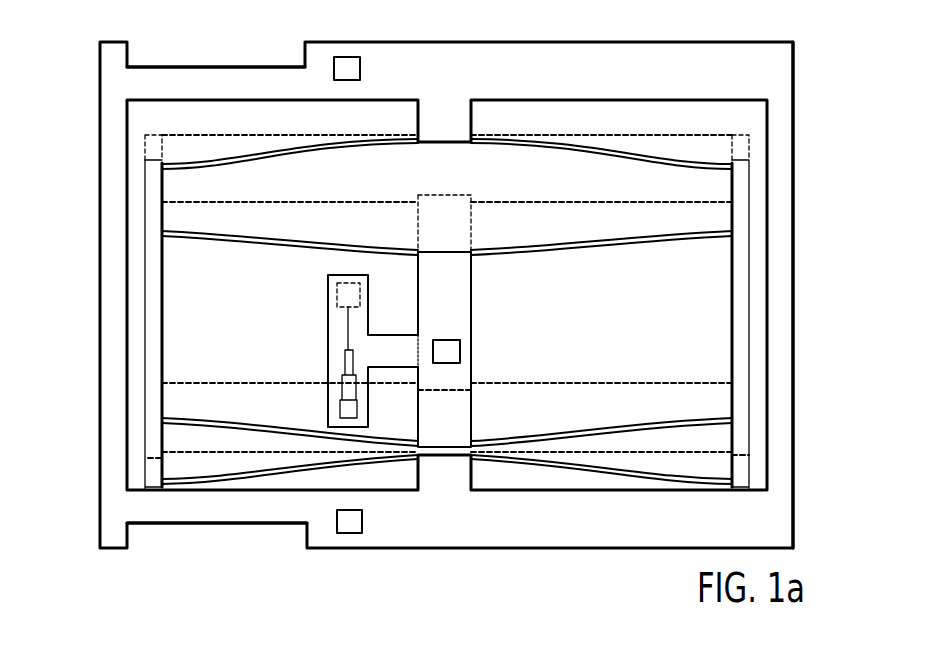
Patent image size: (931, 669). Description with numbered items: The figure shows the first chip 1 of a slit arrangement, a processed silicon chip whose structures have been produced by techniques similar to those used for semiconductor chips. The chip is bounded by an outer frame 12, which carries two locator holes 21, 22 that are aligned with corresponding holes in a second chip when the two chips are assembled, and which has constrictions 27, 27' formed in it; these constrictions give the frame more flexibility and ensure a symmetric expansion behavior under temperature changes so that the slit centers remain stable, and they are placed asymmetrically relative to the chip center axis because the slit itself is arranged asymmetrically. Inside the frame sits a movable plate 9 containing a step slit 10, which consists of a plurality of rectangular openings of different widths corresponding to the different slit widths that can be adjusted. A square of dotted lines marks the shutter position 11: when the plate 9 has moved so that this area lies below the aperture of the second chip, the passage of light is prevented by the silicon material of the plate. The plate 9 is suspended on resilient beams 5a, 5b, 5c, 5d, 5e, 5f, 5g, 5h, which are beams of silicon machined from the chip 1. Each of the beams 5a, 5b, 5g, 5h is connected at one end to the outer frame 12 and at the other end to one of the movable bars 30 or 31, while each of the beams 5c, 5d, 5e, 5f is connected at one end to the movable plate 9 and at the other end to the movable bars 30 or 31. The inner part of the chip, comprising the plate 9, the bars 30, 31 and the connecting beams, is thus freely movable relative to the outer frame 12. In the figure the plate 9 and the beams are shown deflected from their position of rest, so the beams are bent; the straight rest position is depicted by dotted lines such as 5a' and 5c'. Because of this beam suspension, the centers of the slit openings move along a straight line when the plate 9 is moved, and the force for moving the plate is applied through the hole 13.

The first chip 1 is at (818, 244).
The resilient beam 5a is at (290, 168).
The resilient beam 5b is at (532, 143).
The resilient beam 5c is at (290, 260).
The resilient beam 5d is at (600, 243).
The resilient beam 5e is at (257, 421).
The resilient beam 5f is at (588, 425).
The resilient beam 5g is at (380, 458).
The resilient beam 5h is at (516, 458).
The position of rest of beam 5a' is at (447, 124).
The position of rest of beam 5c' is at (448, 326).
The movable plate 9 is at (437, 280).
The step slit 10 is at (345, 357).
The shutter position 11 is at (340, 294).
The outer frame 12 is at (568, 58).
The hole 13 is at (440, 350).
The locator hole 21 is at (342, 68).
The locator hole 22 is at (352, 522).
The constriction 27 is at (216, 35).
The constriction 27' is at (217, 560).
The movable bar 30 is at (150, 316).
The movable bar 31 is at (750, 378).